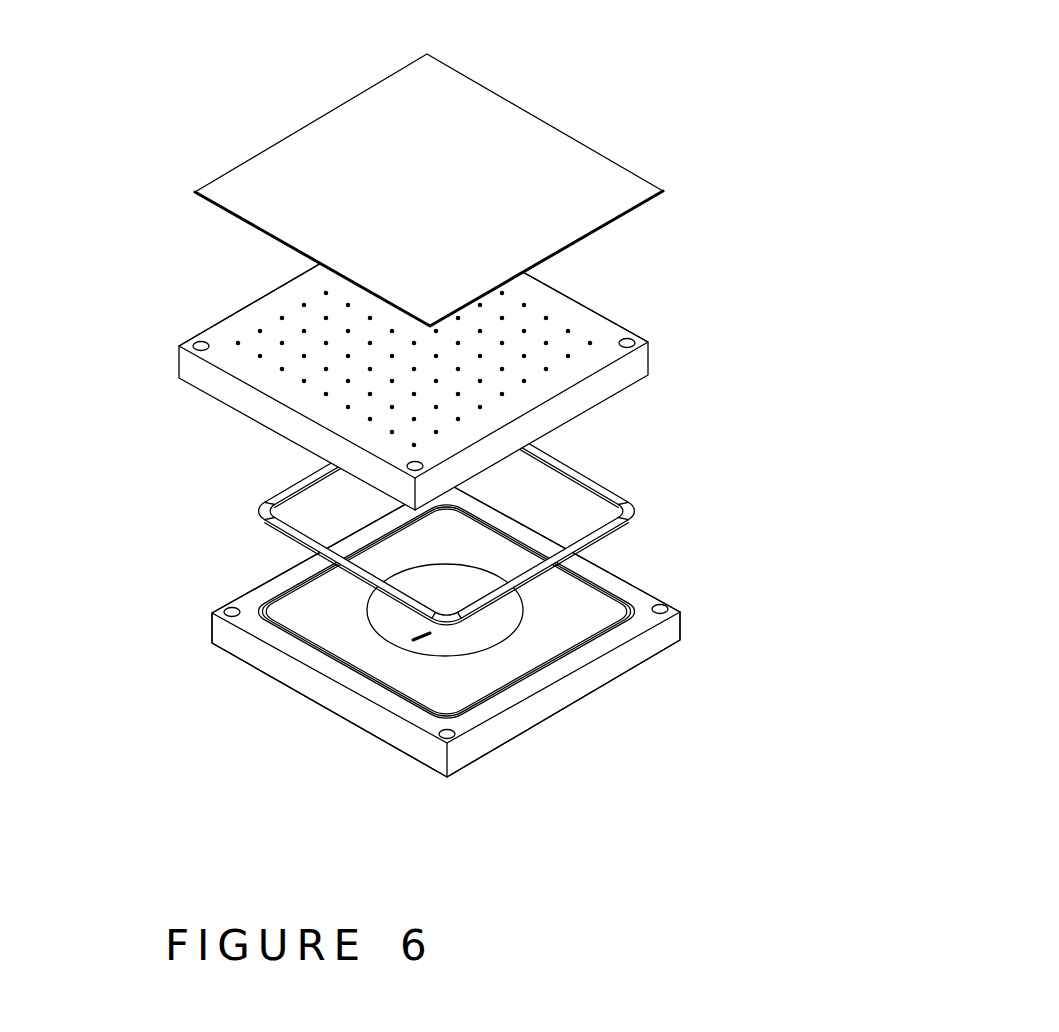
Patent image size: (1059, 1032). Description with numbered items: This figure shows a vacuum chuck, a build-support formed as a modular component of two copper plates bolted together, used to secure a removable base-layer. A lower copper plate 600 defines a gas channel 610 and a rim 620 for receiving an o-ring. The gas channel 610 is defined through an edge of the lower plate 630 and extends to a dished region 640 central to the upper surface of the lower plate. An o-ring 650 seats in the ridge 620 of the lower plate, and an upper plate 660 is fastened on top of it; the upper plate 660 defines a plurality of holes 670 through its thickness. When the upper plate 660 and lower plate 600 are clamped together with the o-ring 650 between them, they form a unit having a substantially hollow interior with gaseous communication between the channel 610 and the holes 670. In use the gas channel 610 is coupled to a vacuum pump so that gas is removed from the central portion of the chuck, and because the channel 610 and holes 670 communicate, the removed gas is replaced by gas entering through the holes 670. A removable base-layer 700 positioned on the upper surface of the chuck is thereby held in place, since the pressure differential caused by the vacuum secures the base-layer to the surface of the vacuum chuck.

The lower copper plate 600 is at (441, 659).
The gas channel 610 is at (332, 692).
The rim for receiving an o-ring 620 is at (620, 587).
The edge of the lower plate 630 is at (373, 722).
The dished region 640 is at (495, 632).
The o-ring 650 is at (610, 485).
The upper plate 660 is at (583, 317).
The holes 670 is at (237, 345).
The cover plate 700 is at (525, 150).